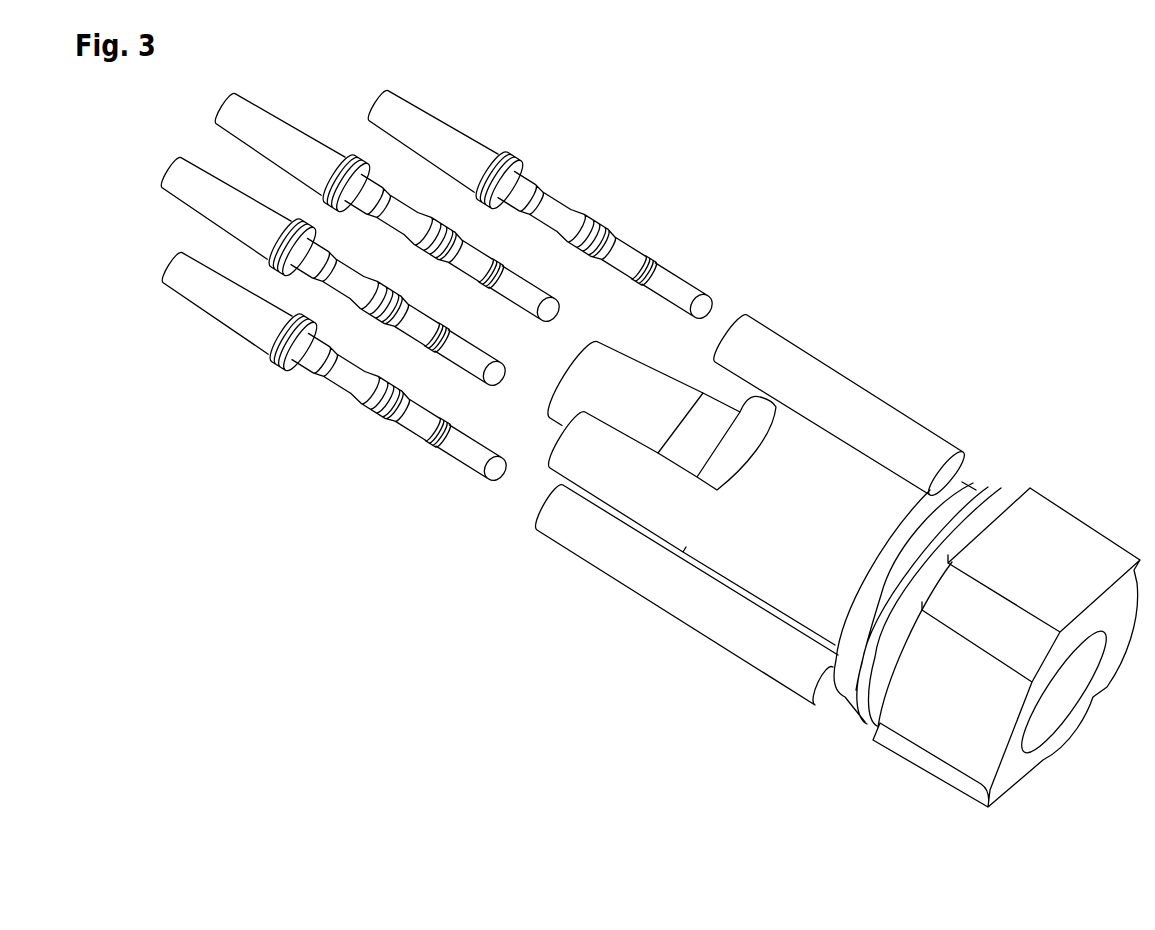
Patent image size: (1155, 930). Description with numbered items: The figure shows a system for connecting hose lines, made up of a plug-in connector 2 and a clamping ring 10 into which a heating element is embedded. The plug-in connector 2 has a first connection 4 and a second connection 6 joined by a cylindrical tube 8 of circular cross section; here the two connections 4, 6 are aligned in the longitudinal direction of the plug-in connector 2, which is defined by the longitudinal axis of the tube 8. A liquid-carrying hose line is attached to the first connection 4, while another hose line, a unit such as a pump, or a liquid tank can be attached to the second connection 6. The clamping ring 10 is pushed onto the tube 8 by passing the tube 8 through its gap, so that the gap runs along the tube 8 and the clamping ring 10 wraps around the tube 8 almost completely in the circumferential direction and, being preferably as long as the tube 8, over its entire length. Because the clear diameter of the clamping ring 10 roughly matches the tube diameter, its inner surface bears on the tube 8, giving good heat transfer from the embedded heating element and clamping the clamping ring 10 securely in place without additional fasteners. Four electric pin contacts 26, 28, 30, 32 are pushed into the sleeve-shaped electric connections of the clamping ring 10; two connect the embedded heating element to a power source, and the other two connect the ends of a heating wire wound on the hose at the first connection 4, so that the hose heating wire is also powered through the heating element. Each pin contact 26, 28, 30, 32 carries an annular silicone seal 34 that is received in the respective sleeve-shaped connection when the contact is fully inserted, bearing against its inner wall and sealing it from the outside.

The plug-in connector 2 is at (838, 507).
The first connection 4 is at (633, 397).
The second connection 6 is at (1034, 757).
The tube 8 is at (756, 597).
The clamping ring 10 is at (868, 407).
The electric pin contact 26 is at (336, 369).
The electric pin contact 28 is at (403, 322).
The electric pin contact 30 is at (466, 256).
The electric pin contact 32 is at (574, 233).
The annular silicone seal 34 is at (268, 358).